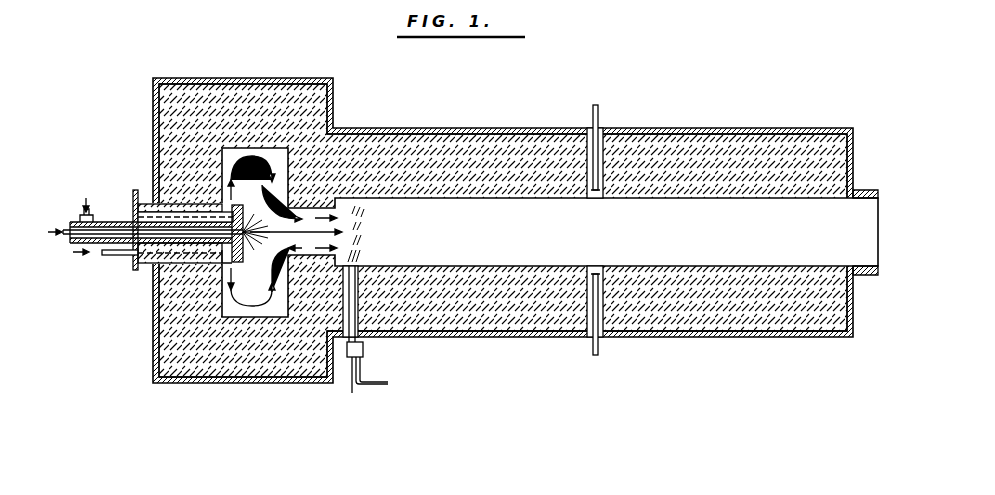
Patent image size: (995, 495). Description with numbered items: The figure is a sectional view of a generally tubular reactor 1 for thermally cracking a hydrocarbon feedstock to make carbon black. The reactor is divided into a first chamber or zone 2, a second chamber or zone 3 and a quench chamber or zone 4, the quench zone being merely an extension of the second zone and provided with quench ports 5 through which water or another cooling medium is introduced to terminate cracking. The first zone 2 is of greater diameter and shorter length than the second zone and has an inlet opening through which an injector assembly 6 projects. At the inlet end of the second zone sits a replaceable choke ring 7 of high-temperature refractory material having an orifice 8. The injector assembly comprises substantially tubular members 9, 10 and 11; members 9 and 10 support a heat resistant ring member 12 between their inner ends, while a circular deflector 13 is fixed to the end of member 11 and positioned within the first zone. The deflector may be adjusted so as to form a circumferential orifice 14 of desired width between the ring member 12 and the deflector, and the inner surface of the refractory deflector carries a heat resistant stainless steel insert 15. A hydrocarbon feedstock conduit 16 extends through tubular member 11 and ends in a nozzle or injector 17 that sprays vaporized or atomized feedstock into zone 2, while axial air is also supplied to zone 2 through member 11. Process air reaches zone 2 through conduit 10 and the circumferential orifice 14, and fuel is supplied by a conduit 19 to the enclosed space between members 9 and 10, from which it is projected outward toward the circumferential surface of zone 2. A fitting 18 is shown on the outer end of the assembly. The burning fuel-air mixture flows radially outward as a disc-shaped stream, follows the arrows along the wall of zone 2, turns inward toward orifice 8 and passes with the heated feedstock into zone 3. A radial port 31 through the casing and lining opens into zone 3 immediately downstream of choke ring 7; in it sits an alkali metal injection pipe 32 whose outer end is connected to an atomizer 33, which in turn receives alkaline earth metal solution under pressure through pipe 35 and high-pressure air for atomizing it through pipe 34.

The tubular reactor 1 is at (494, 128).
The first chamber or zone 2 is at (282, 180).
The second chamber or zone 3 is at (477, 237).
The quench chamber or zone 4 is at (751, 247).
The quench ports 5 is at (594, 200).
The injector assembly 6 is at (150, 213).
The replaceable choke ring 7 is at (308, 258).
The orifice 8 is at (330, 227).
The tubular member 9 is at (175, 206).
The tubular member 10 is at (140, 206).
The tubular member 11 is at (178, 212).
The heat resistant ring member 12 is at (251, 178).
The circular deflector 13 is at (240, 258).
The circumferential orifice 14 is at (228, 256).
The heat resistant stainless steel insert 15 is at (250, 287).
The hydrocarbon feedstock conduit 16 is at (68, 240).
The nozzle or injector 17 is at (248, 222).
The inlet fitting 18 is at (82, 217).
The conduit 19 is at (113, 256).
The radial port 31 is at (360, 318).
The alkali metal injection pipe 32 is at (357, 278).
The atomizer 33 is at (358, 348).
The pipe 34 is at (385, 385).
The pipe 35 is at (351, 394).